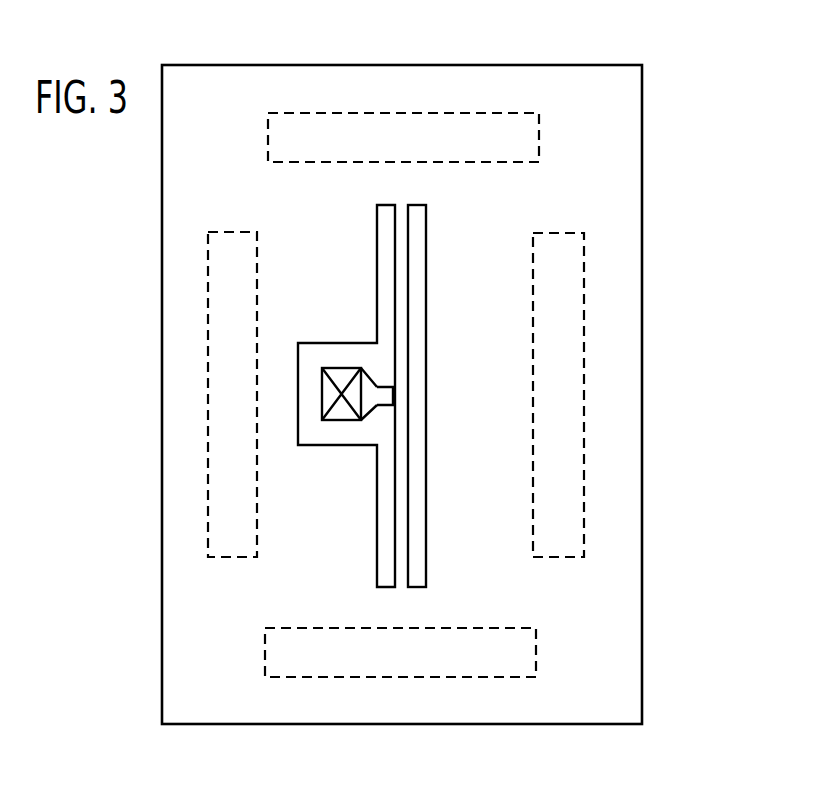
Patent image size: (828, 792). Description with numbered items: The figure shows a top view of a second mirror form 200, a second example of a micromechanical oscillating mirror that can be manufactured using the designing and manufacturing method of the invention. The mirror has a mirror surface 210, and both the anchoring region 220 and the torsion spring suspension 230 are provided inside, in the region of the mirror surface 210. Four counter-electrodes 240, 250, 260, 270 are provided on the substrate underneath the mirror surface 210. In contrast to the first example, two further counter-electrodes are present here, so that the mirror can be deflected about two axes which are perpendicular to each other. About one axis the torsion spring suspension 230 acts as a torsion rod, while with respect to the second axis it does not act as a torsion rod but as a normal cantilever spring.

The second mirror form 200 is at (645, 153).
The mirror surface 210 is at (164, 576).
The anchoring region 220 is at (348, 418).
The torsion spring suspension 230 is at (401, 283).
The counter-electrode 240 is at (231, 233).
The counter-electrode 250 is at (558, 234).
The counter-electrode 260 is at (318, 160).
The counter-electrode 270 is at (478, 633).